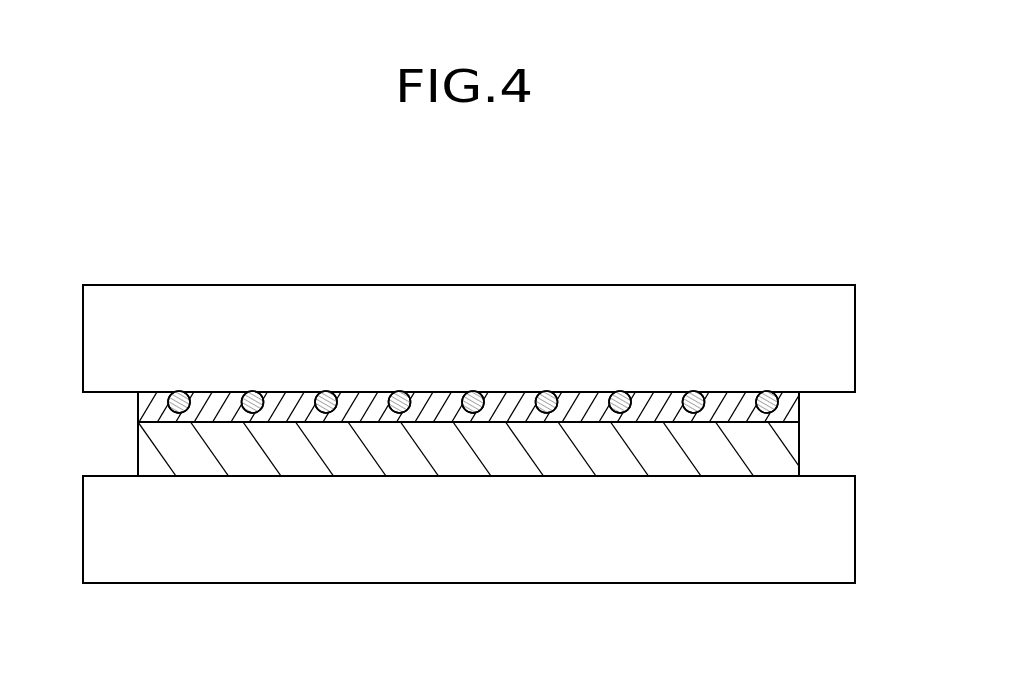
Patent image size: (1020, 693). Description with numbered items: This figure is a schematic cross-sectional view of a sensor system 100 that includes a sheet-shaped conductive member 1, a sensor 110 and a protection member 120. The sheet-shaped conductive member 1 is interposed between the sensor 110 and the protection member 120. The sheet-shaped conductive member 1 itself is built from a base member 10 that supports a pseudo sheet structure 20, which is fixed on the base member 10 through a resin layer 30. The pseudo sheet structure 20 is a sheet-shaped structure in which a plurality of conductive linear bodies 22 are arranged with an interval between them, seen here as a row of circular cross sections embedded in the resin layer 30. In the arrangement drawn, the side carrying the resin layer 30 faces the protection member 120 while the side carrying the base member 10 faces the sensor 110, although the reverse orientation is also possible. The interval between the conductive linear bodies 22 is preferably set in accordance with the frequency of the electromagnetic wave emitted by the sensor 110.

The sheet-shaped conductive member 1 is at (82, 433).
The sensor system 100 is at (666, 221).
The sensor 110 is at (830, 538).
The protection member 120 is at (730, 295).
The base member 10 is at (782, 455).
The resin layer 30 is at (792, 412).
The pseudo sheet structure 20 is at (155, 620).
The conductive linear bodies 22 is at (177, 413).